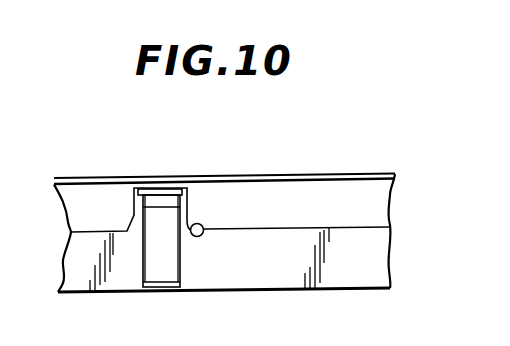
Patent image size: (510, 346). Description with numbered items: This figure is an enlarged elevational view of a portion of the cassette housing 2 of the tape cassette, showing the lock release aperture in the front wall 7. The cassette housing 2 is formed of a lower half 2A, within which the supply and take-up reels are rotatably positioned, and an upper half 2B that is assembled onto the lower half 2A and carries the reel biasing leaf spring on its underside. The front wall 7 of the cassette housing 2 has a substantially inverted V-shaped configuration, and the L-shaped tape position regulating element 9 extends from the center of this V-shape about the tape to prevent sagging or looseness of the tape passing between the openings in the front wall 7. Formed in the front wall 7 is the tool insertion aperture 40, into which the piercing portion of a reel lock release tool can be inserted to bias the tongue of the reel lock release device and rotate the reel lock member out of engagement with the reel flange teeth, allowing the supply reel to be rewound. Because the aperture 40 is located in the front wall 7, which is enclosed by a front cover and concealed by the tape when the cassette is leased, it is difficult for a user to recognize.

The cassette housing 2 is at (266, 233).
The lower half of cassette housing 2A is at (368, 250).
The upper half of cassette housing 2B is at (368, 203).
The front wall 7 is at (283, 262).
The tape position regulating element 9 is at (158, 265).
The tool insertion aperture 40 is at (195, 237).